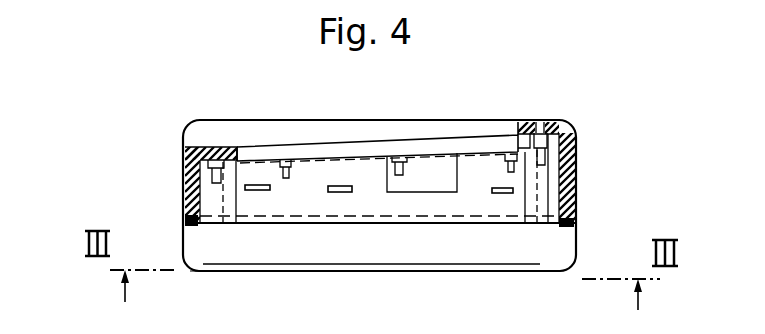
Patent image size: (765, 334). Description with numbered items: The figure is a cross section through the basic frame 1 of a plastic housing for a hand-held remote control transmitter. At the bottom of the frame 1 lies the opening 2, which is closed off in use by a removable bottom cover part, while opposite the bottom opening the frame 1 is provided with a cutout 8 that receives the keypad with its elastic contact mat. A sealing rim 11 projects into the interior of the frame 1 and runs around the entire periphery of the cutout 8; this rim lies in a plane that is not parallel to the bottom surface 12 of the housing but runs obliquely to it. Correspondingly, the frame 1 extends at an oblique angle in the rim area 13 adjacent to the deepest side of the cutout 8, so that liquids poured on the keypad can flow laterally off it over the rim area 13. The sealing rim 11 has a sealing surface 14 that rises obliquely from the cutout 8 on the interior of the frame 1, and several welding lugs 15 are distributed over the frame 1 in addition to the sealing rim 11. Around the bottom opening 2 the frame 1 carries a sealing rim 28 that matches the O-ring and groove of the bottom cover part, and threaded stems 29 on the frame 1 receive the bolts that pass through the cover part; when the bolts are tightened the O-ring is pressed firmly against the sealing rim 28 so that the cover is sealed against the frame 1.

The basic frame 1 is at (185, 167).
The opening 2 is at (332, 243).
The cutout 8 is at (450, 145).
The sealing rim 11 is at (518, 124).
The bottom surface 12 is at (297, 266).
The rim area 13 is at (208, 147).
The sealing surface 14 is at (237, 150).
The welding lugs 15 is at (400, 157).
The sealing rim 28 is at (184, 218).
The threaded stems 29 is at (530, 195).